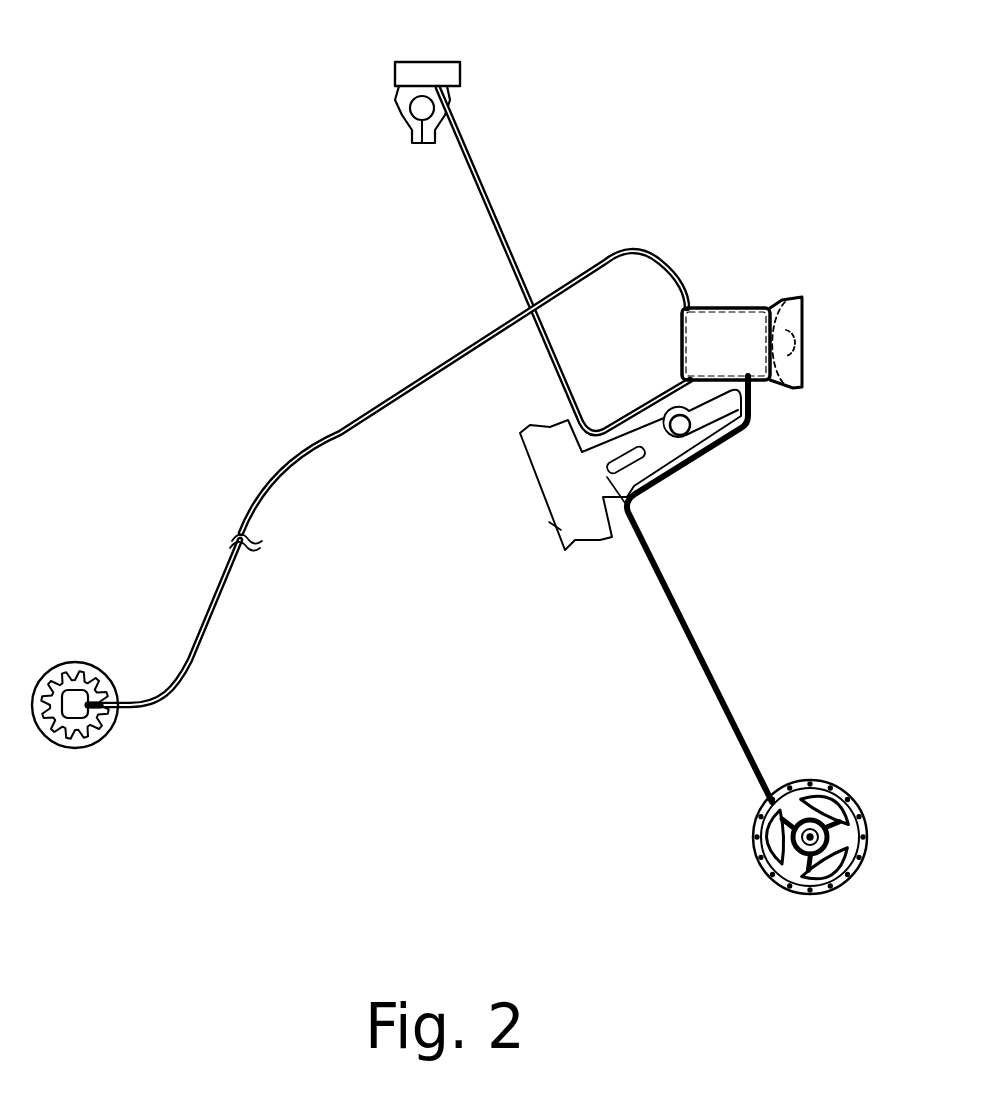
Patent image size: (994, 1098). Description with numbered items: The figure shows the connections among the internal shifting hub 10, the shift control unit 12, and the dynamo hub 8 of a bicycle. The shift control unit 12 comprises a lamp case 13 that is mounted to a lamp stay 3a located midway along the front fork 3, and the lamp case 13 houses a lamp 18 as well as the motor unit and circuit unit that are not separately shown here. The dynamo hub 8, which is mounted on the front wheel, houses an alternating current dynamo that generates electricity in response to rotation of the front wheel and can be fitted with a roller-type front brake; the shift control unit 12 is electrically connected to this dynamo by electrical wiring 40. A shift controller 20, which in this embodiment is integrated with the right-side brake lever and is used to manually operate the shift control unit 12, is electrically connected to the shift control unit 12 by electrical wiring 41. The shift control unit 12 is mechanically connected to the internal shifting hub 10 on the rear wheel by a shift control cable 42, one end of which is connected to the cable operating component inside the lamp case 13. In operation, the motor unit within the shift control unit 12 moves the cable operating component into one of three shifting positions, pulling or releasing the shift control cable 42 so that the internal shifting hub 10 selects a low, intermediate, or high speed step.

The front fork 3 is at (556, 527).
The lamp stay 3a is at (630, 505).
The dynamo hub 8 is at (819, 782).
The internal shifting hub 10 is at (101, 738).
The shift control unit 12 is at (705, 307).
The lamp case 13 is at (728, 320).
The lamp 18 is at (804, 315).
The shift controller 20 is at (455, 76).
The electrical wiring 40 is at (698, 647).
The electrical wiring 41 is at (490, 206).
The shift control cable 42 is at (437, 372).